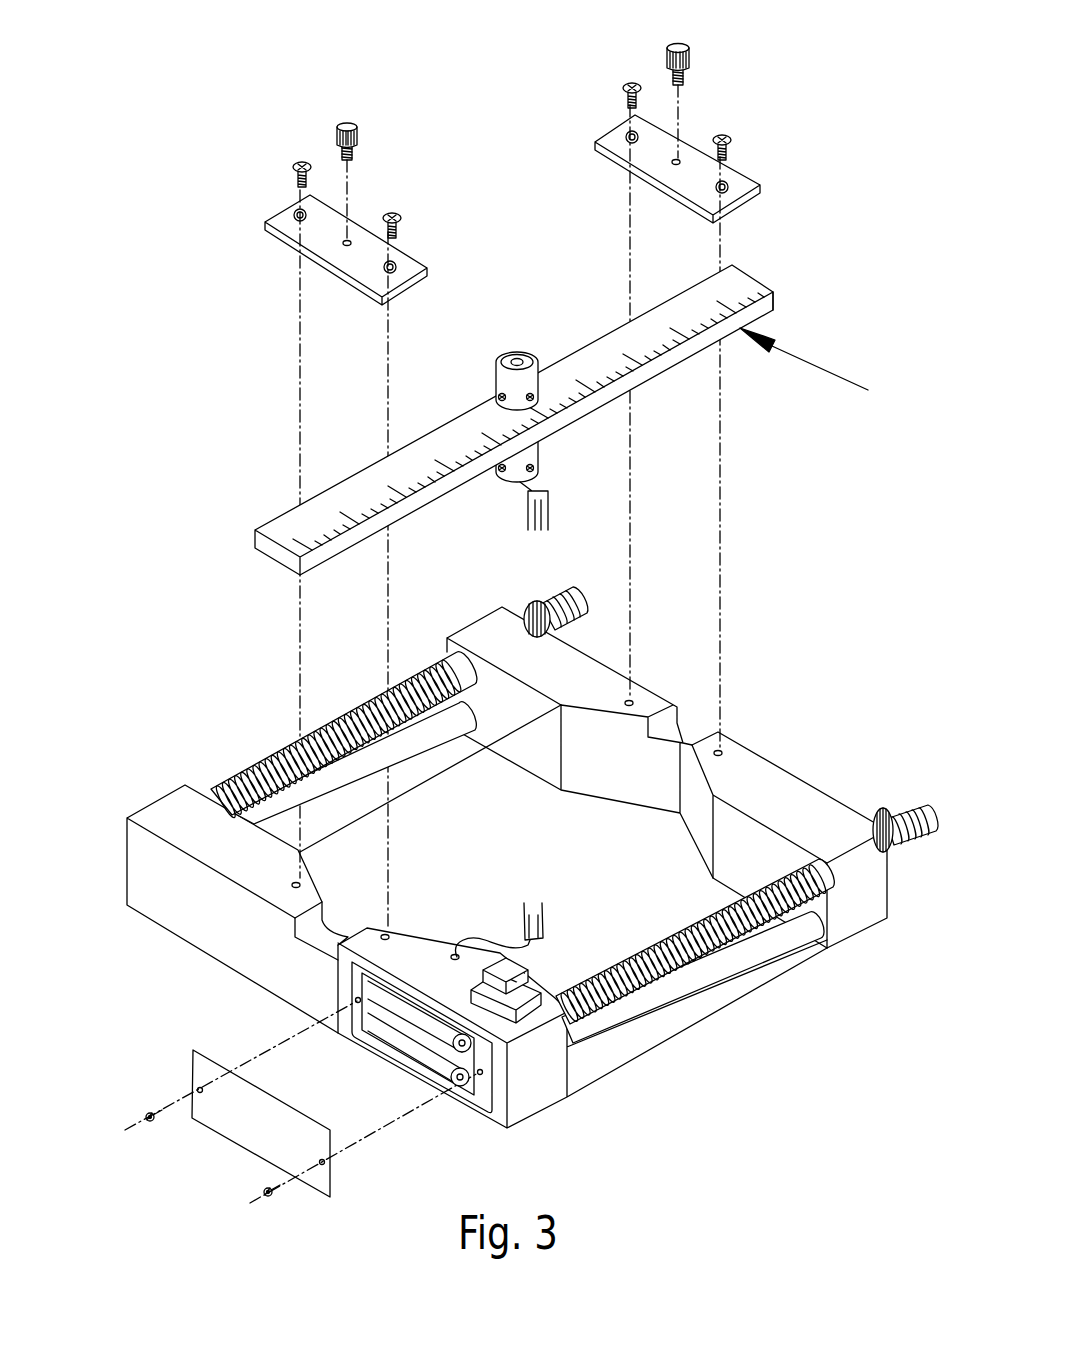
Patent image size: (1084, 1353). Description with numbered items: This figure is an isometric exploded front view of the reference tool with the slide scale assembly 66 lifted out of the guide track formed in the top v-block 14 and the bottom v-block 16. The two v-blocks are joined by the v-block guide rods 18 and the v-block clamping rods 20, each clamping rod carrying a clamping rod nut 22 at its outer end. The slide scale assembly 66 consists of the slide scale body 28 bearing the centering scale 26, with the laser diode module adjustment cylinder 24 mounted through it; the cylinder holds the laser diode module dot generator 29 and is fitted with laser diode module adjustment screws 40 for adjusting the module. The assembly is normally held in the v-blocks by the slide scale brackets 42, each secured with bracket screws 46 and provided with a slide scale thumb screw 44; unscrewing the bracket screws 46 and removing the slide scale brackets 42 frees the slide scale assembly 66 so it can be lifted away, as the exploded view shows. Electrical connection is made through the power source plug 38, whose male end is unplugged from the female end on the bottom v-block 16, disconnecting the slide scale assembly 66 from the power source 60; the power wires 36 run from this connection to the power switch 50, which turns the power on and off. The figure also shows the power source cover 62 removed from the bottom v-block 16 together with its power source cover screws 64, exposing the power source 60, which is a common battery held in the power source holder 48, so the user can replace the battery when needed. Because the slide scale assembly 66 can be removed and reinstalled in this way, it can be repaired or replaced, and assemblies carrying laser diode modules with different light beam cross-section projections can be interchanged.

The top v-block 14 is at (740, 745).
The bottom v-block 16 is at (190, 925).
The v-block guide rod 18 is at (415, 752).
The v-block clamping rod 20 is at (264, 757).
The clamping rod nut 22 is at (528, 603).
The laser diode module adjustment cylinder 24 is at (505, 395).
The centering scale 26 is at (746, 284).
The slide scale body 28 is at (772, 298).
The laser diode module dot generator 29 is at (522, 353).
The power wires 36 is at (486, 938).
The power source plug 38 is at (548, 908).
The laser diode module adjustment screw 40 is at (499, 396).
The slide scale bracket 42 is at (420, 255).
The slide scale thumb screw 44 is at (352, 125).
The bracket screws 46 is at (296, 162).
The power source holder 48 is at (352, 998).
The power switch (on / off) 50 is at (530, 968).
The power source 60 is at (420, 1015).
The power source cover 62 is at (245, 1130).
The power source cover screw 64 is at (150, 1118).
The slide scale assembly 66 is at (820, 369).